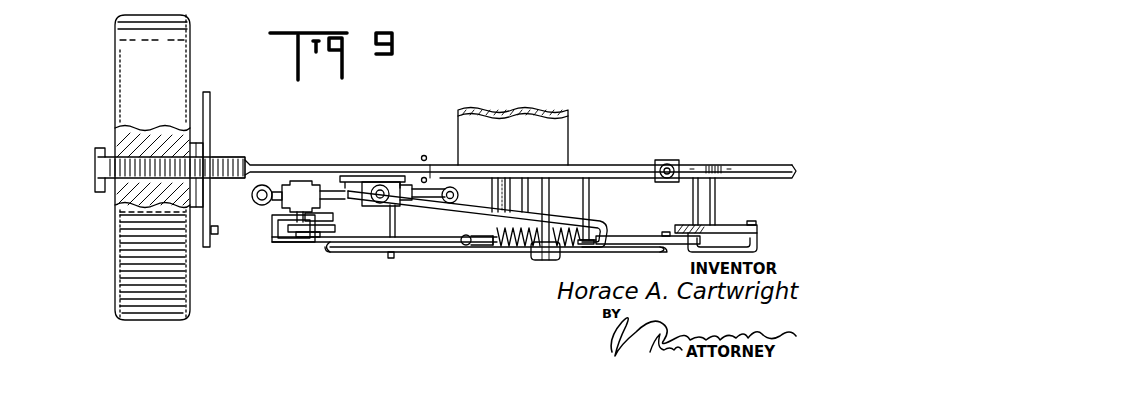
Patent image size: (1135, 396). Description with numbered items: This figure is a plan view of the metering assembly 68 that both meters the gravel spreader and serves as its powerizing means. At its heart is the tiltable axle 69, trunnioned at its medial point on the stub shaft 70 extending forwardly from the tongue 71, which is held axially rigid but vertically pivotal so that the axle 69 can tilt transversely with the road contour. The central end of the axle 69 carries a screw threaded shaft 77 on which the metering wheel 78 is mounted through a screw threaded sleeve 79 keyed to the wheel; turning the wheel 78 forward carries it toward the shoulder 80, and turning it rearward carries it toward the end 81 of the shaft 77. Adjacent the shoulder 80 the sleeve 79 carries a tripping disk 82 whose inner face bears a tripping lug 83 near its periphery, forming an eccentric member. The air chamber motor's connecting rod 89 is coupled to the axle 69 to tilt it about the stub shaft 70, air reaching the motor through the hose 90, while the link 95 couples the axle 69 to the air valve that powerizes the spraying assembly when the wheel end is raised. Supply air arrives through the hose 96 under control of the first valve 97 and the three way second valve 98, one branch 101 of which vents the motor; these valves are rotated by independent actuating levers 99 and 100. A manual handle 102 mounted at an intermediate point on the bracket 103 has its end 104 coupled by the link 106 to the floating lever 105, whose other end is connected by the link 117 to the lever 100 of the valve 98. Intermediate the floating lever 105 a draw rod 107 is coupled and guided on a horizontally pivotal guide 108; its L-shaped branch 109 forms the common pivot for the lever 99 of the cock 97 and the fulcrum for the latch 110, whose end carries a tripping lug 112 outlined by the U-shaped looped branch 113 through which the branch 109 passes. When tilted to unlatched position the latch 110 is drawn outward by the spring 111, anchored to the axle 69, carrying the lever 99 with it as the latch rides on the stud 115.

The metering assembly 68 is at (344, 300).
The tiltable axle 69 is at (605, 165).
The stub shaft 70 is at (506, 190).
The tongue 71 is at (520, 110).
The screw threaded shaft 77 is at (222, 162).
The metering wheel 78 is at (133, 62).
The screw threaded sleeve 79 is at (196, 150).
The shoulder 80 is at (254, 166).
The end of shaft 81 is at (97, 168).
The tripping disk 82 is at (209, 114).
The tripping lug 83 is at (216, 237).
The connecting rod 89 is at (667, 160).
The hose 90 is at (459, 197).
The link 95 is at (425, 155).
The hose 96 is at (251, 195).
The first valve 97 is at (293, 182).
The second valve 98 is at (399, 183).
The actuating lever 99 is at (300, 235).
The actuating lever 100 is at (347, 178).
The branch 101 is at (378, 186).
The handle 102 is at (724, 226).
The bracket 103 is at (708, 166).
The end of handle 104 is at (757, 226).
The floating lever 105 is at (642, 236).
The link 106 is at (759, 245).
The draw rod 107 is at (485, 251).
The horizontally pivotal guide 108 is at (541, 259).
The L-shaped branch 109 is at (330, 248).
The latch 110 is at (402, 247).
The spring 111 is at (488, 235).
The tripping lug 112 is at (273, 230).
The U-shaped looped branch 113 is at (334, 218).
The stud 115 is at (391, 259).
The link 117 is at (598, 222).